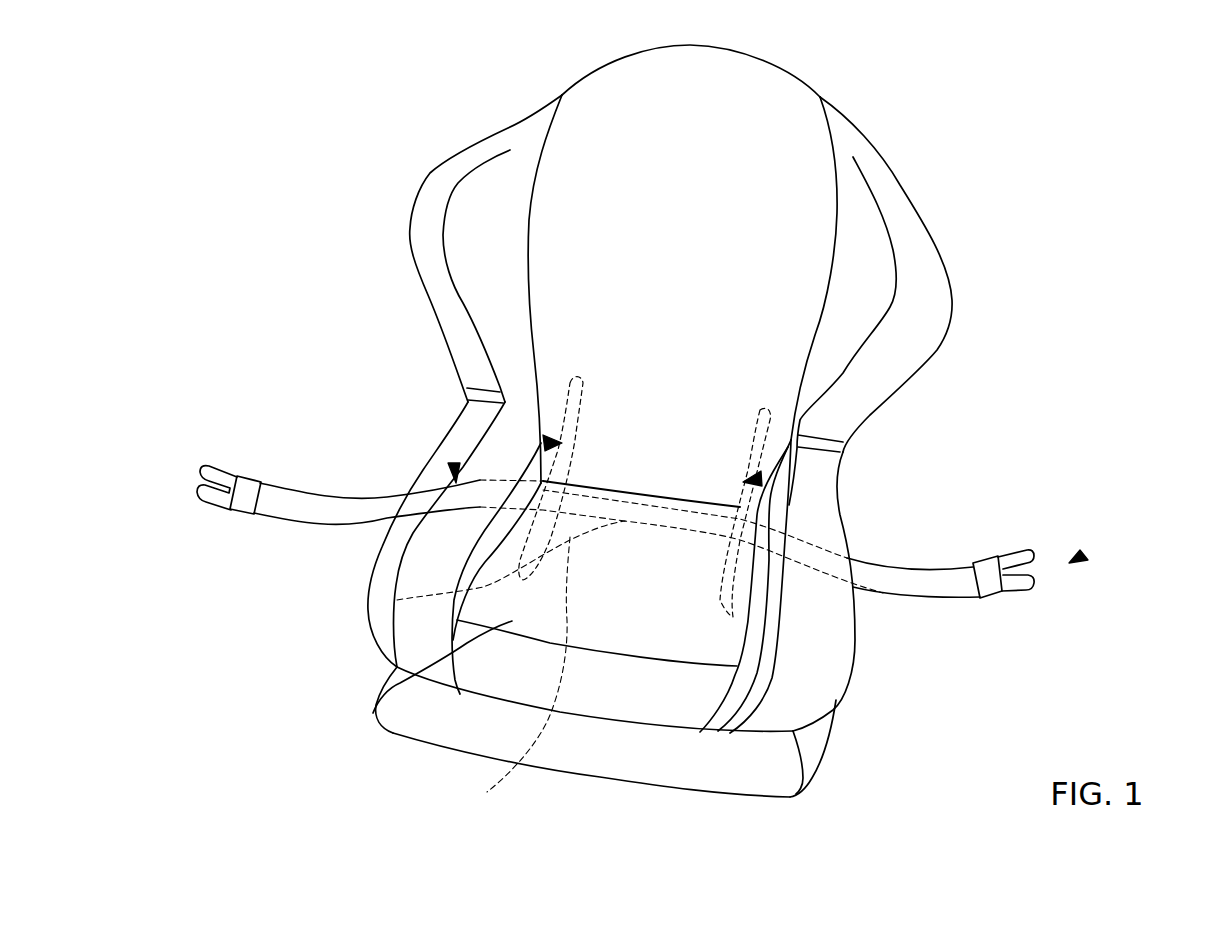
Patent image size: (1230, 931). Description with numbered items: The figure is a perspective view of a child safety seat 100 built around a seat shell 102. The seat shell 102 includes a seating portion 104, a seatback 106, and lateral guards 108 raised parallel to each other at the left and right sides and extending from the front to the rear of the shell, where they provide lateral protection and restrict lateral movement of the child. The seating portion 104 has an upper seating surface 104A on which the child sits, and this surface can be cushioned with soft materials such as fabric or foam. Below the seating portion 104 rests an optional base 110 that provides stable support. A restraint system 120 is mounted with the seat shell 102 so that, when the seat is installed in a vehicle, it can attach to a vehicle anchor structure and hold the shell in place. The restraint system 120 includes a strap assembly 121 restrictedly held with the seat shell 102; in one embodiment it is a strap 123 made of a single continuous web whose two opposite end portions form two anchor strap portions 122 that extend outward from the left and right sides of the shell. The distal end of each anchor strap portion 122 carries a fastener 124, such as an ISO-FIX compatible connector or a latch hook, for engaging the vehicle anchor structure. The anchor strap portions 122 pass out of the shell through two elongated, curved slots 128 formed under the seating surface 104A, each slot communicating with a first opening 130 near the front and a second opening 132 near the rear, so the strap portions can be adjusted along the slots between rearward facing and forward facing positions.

The child safety seat 100 is at (128, 77).
The seat shell 102 is at (923, 333).
The seating portion 104 is at (640, 597).
The upper seating surface 104A is at (390, 731).
The seatback 106 is at (668, 183).
The lateral guards 108 is at (377, 563).
The base 110 is at (810, 737).
The restraint system 120 is at (1086, 556).
The strap assembly 121 is at (447, 463).
The anchor strap portions 122 is at (329, 492).
The strap 123 is at (521, 672).
The fastener 124 is at (236, 506).
The slots 128 is at (467, 391).
The first opening 130 is at (367, 611).
The second opening 132 is at (570, 392).